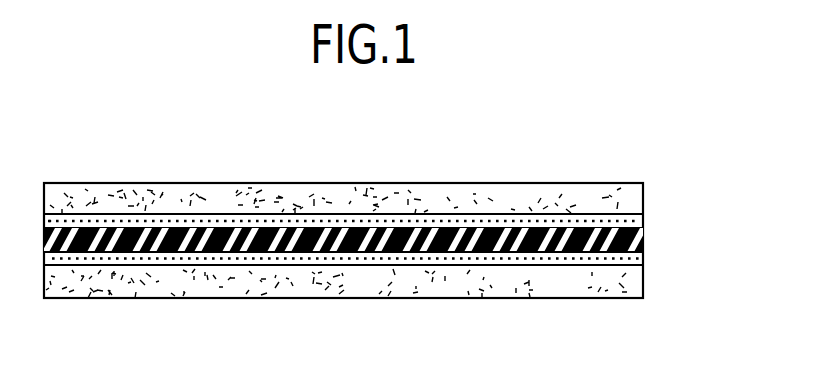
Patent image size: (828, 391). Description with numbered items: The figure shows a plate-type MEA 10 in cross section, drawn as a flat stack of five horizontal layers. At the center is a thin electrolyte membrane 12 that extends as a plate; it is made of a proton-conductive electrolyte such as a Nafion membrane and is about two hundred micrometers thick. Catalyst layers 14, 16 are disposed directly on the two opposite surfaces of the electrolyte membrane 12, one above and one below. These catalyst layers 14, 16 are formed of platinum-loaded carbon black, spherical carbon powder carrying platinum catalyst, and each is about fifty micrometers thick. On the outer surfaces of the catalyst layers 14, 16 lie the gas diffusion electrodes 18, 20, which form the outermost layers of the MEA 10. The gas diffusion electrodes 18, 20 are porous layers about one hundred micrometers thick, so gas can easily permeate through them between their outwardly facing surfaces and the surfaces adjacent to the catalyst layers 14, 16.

The MEA 10 is at (630, 158).
The electrolyte membrane 12 is at (397, 242).
The catalyst layer 14 is at (298, 257).
The catalyst layer 16 is at (297, 223).
The gas diffusion electrode 18 is at (522, 280).
The gas diffusion electrode 20 is at (522, 200).